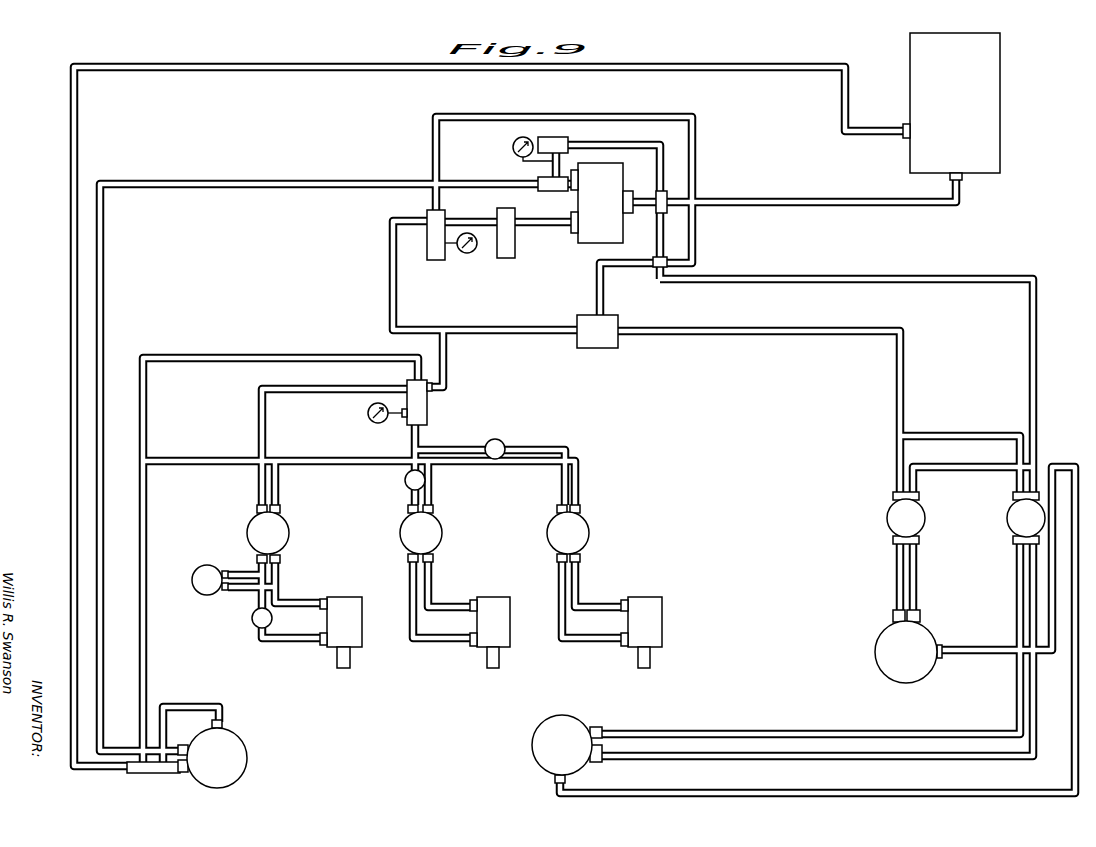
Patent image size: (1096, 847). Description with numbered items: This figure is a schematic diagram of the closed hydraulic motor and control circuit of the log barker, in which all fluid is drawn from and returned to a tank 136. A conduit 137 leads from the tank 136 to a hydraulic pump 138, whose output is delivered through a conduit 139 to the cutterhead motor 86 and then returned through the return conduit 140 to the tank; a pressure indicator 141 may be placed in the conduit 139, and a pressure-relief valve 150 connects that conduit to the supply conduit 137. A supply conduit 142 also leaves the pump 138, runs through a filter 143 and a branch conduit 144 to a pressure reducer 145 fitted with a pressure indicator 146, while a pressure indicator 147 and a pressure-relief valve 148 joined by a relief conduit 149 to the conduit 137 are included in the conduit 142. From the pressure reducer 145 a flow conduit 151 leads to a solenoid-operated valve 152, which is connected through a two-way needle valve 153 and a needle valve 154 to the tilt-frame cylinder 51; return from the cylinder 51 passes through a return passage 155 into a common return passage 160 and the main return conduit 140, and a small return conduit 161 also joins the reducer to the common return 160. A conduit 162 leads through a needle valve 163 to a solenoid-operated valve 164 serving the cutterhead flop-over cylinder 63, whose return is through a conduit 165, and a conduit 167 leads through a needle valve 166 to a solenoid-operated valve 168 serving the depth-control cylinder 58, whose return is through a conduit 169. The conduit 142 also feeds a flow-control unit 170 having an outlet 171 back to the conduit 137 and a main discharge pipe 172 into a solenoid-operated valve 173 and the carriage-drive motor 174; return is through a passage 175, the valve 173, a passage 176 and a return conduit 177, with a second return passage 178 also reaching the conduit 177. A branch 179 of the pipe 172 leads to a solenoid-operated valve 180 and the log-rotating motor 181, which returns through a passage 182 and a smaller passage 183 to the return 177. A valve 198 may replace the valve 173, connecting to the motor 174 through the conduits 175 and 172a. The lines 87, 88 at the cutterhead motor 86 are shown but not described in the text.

The tank 136 is at (992, 117).
The conduit 137 is at (808, 204).
The hydraulic pump 138 is at (592, 245).
The conduit 139 is at (255, 189).
The return conduit 140 is at (70, 171).
The pressure indicator 141 is at (512, 147).
The supply conduit 142 is at (533, 225).
The filter 143 is at (506, 260).
The branch conduit 144 is at (447, 365).
The pressure reducer 145 is at (428, 405).
The pressure indicator 146 is at (375, 423).
The pressure indicator 147 is at (466, 255).
The pressure-relief valve 148 is at (431, 262).
The relief conduit 149 is at (575, 116).
The pressure-relief valve 150 is at (562, 137).
The flow conduit 151 is at (293, 389).
The solenoid-operated valve 152 is at (282, 531).
The two-way needle valve 153 is at (198, 596).
The needle valve 154 is at (252, 626).
The return passage 155 is at (303, 603).
The tilt-frame cylinder 51 is at (355, 624).
The common return passage 160 is at (200, 466).
The return conduit 161 is at (248, 357).
The conduit 162 is at (418, 438).
The needle valve 163 is at (405, 484).
The solenoid-operated valve 164 is at (442, 536).
The conduit 165 is at (443, 607).
The cutterhead flop-over or rotate cylinder 63 is at (499, 661).
The needle valve 166 is at (492, 440).
The conduit 167 is at (541, 448).
The solenoid-operated valve 168 is at (590, 536).
The conduit 169 is at (603, 607).
The depth-control cylinder 58 is at (657, 624).
The flow-control unit 170 is at (605, 349).
The outlet 171 is at (603, 294).
The pipe 172 is at (898, 394).
The conduit 172a is at (897, 576).
The solenoid-operated valve 173 is at (880, 517).
The valve 198 is at (896, 497).
The motor 174 is at (876, 649).
The passage 175 is at (917, 573).
The passage 176 is at (956, 471).
The return conduit 177 is at (1036, 390).
The second return passage 178 is at (962, 653).
The branch 179 is at (953, 432).
The solenoid-operated valve 180 is at (1008, 523).
The log-rotating motor 181 is at (533, 741).
The passage 182 is at (790, 758).
The passage 183 is at (689, 792).
The cutterhead motor 86 is at (247, 759).
The hose 87 is at (178, 773).
The hose 88 is at (183, 745).